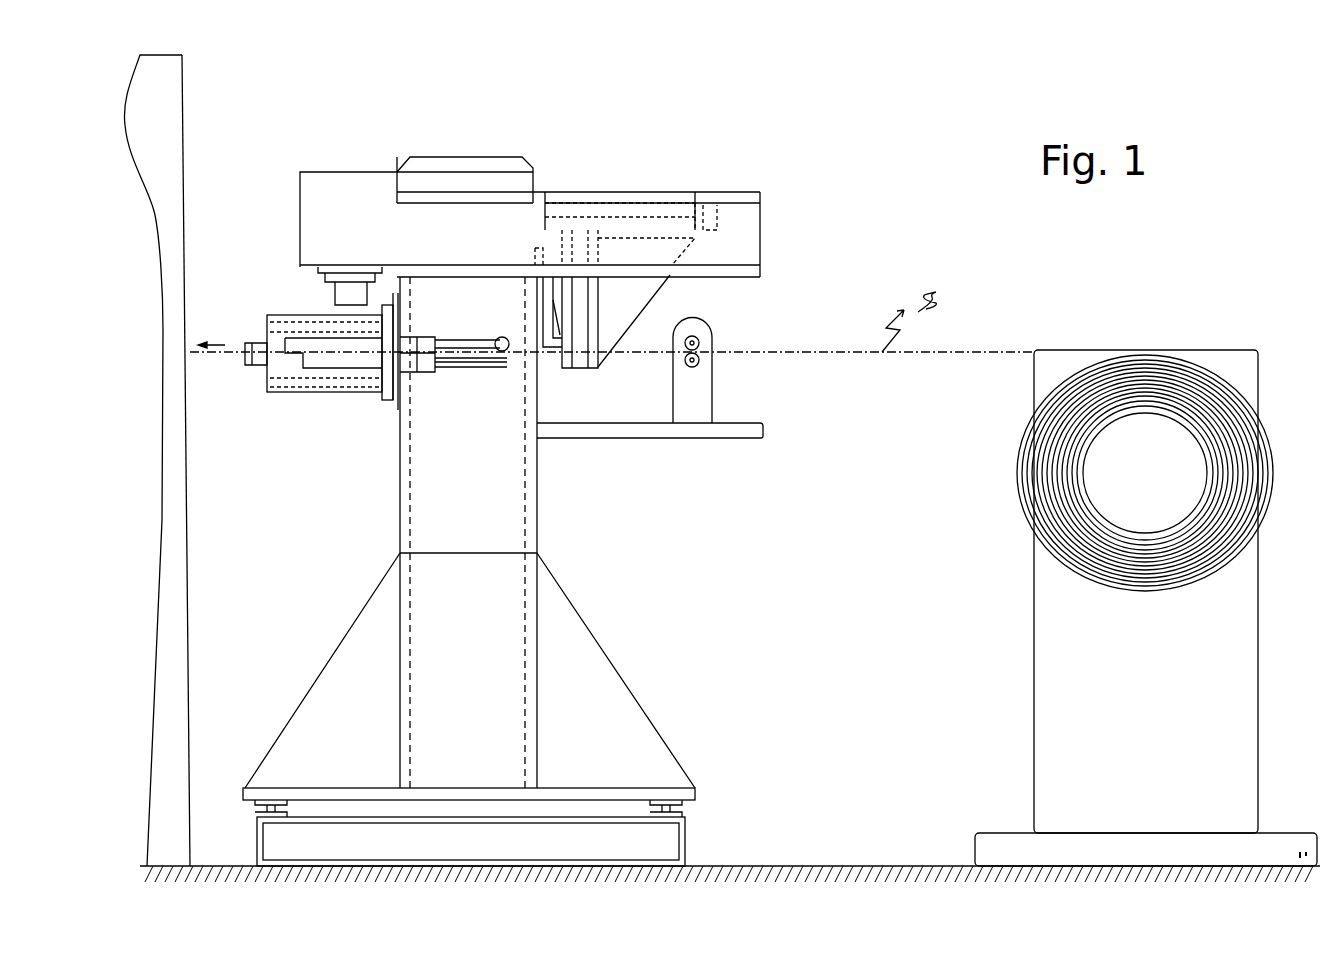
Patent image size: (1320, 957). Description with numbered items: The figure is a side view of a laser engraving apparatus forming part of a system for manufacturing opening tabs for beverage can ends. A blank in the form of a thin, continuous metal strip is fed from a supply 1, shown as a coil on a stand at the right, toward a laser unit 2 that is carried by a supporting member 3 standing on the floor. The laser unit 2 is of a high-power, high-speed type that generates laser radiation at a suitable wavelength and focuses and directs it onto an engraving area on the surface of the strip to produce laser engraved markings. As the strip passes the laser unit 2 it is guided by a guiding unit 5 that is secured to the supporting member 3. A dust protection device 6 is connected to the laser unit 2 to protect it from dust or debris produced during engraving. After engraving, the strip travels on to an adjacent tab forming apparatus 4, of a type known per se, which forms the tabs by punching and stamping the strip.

The supply 1 is at (1226, 368).
The laser unit 2 is at (315, 222).
The supporting member 3 is at (395, 522).
The tab forming apparatus 4 is at (152, 170).
The guiding unit 5 is at (287, 394).
The dust protection device 6 is at (348, 296).